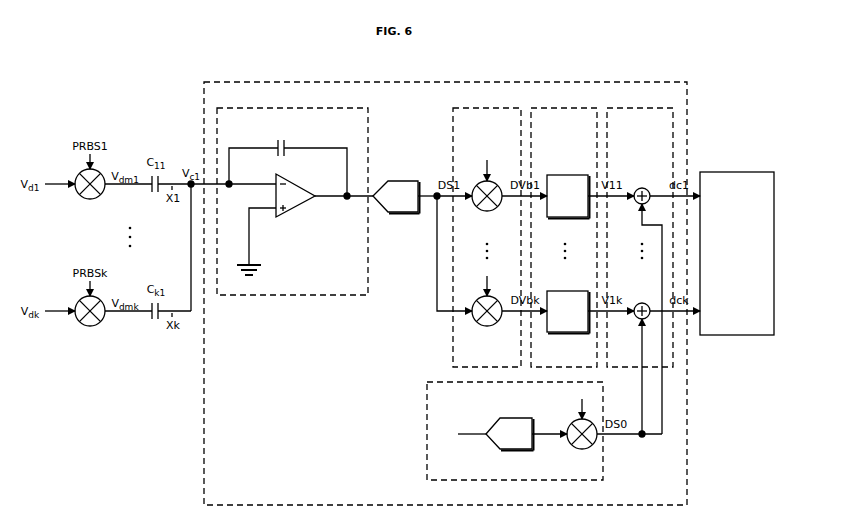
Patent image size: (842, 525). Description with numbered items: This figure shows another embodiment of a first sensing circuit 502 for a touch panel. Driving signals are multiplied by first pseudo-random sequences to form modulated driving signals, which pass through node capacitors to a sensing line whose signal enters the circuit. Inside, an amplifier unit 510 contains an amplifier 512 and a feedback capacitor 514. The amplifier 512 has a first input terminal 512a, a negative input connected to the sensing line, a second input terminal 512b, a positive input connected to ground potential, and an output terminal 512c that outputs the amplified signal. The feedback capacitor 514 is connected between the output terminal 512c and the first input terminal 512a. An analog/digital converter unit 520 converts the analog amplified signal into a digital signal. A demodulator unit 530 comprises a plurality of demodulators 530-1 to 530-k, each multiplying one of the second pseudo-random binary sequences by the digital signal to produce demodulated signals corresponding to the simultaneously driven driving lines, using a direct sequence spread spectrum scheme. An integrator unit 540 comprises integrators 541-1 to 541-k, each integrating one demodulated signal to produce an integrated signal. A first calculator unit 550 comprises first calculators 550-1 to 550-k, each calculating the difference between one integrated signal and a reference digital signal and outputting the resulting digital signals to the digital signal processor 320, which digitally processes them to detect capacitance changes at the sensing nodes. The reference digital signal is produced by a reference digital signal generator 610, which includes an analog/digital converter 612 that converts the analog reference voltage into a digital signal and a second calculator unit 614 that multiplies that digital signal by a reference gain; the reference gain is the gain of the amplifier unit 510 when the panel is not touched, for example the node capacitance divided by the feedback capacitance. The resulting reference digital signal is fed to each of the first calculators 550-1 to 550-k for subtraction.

The first sensing circuit 502 is at (566, 82).
The amplifier unit 510 is at (285, 108).
The amplifier 512 is at (286, 179).
The first input terminal 512a is at (251, 181).
The second input terminal 512b is at (262, 212).
The output terminal 512c is at (325, 200).
The feedback capacitor 514 is at (290, 142).
The analog/digital converter unit 520 is at (401, 180).
The demodulator unit 530 is at (485, 108).
The first demodulator 530-1 is at (487, 211).
The k-th demodulator 530-k is at (487, 326).
The integrator unit 540 is at (565, 108).
The first integrator 541-1 is at (567, 175).
The k-th integrator 541-k is at (567, 291).
The first calculator unit 550 is at (637, 108).
The first calculator 550-1 is at (642, 188).
The k-th first calculator 550-k is at (642, 303).
The digital signal processor 320 is at (762, 172).
The reference digital signal generator 610 is at (427, 432).
The analog/digital converter 612 is at (514, 418).
The second calculator unit 614 is at (582, 449).